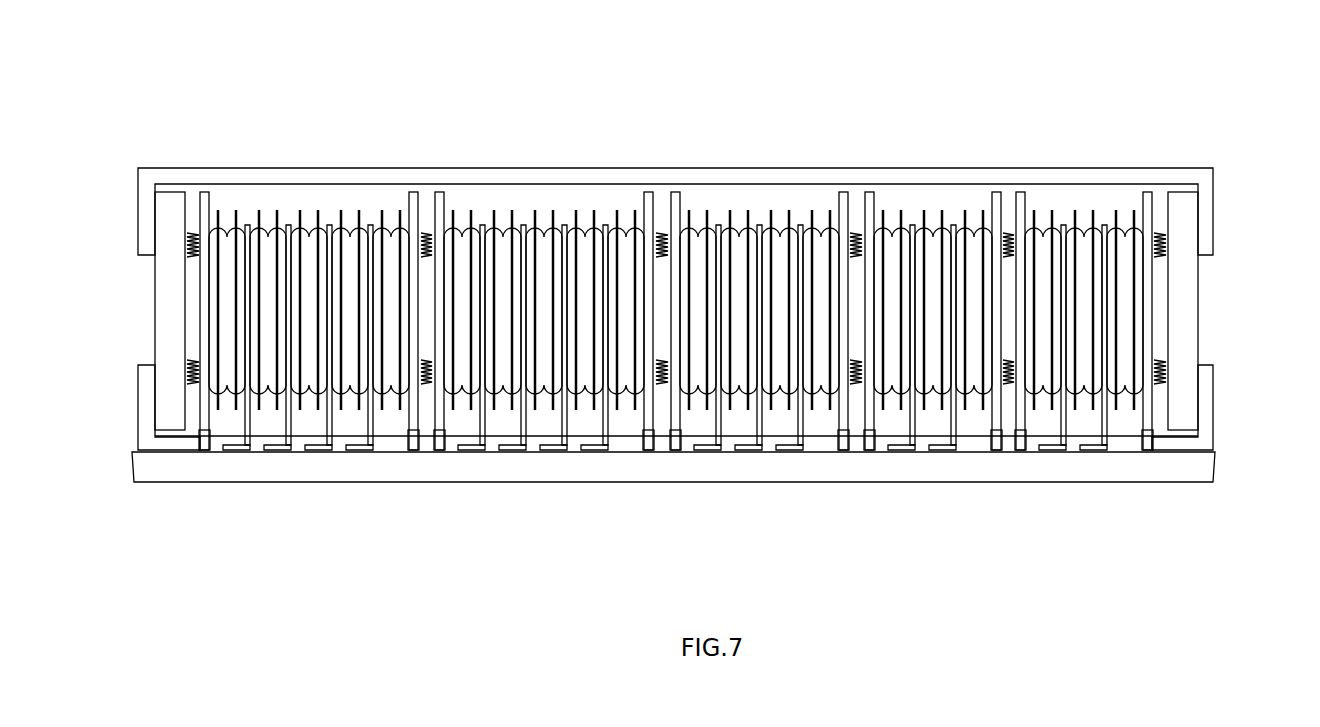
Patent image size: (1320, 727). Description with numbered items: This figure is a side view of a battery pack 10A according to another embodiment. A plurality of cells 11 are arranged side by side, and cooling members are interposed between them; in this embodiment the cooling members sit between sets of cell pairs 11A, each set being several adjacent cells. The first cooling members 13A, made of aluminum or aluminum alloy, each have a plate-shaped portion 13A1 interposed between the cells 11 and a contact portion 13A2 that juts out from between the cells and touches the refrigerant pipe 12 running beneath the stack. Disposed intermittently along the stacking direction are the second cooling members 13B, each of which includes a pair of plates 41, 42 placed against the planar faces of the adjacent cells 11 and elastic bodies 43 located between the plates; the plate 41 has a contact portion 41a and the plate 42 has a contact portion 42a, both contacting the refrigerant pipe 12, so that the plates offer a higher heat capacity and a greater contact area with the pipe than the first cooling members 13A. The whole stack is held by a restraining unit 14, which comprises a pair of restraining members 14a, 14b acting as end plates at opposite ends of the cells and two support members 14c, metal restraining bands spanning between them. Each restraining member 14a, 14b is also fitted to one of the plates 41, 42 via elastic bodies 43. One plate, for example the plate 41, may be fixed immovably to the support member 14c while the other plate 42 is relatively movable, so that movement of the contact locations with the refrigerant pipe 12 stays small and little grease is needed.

The battery pack 10A is at (1069, 105).
The cell 11 is at (676, 254).
The cell pair 11A is at (277, 208).
The refrigerant pipe 12 is at (1202, 482).
The first cooling member 13A is at (651, 331).
The plate-shaped portion 13A1 is at (243, 250).
The contact portion 13A2 is at (232, 445).
The second cooling member 13B is at (672, 282).
The restraining unit 14 is at (1232, 170).
The restraining member 14a is at (153, 298).
The restraining member 14b is at (1200, 300).
The support member 14c is at (1183, 168).
The plate 41 is at (413, 192).
The contact portion 41a is at (406, 445).
The plate 42 is at (207, 192).
The contact portion 42a is at (214, 445).
The elastic body 43 is at (427, 233).